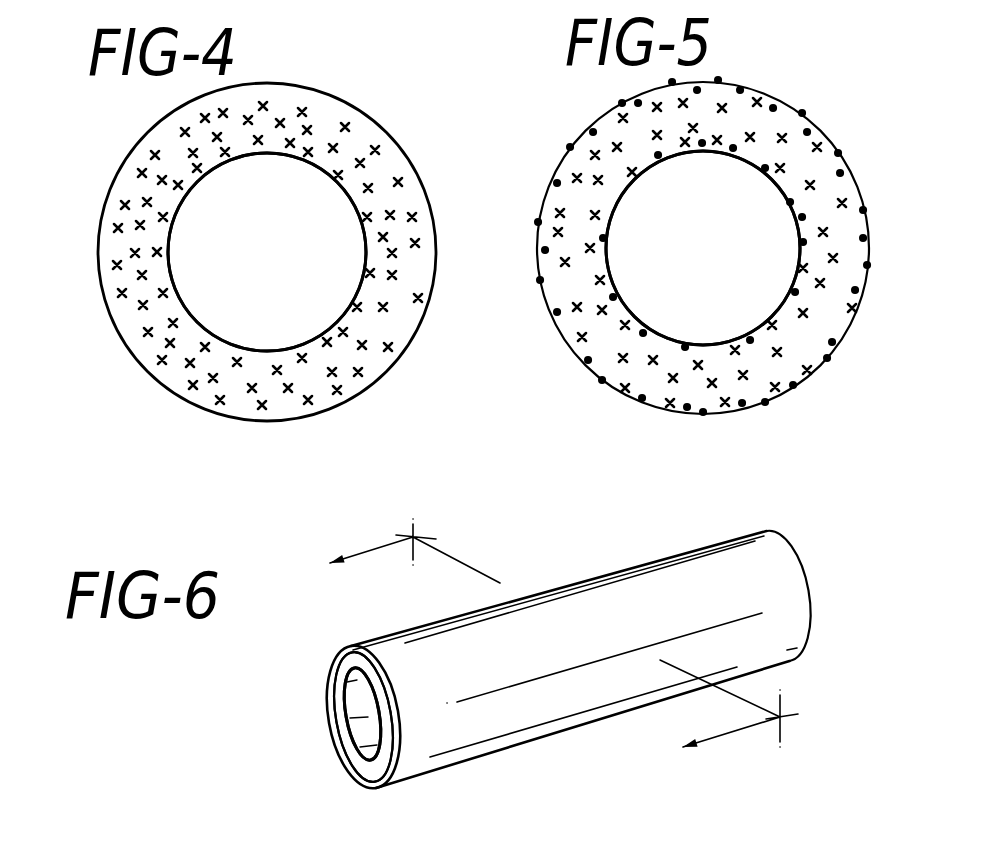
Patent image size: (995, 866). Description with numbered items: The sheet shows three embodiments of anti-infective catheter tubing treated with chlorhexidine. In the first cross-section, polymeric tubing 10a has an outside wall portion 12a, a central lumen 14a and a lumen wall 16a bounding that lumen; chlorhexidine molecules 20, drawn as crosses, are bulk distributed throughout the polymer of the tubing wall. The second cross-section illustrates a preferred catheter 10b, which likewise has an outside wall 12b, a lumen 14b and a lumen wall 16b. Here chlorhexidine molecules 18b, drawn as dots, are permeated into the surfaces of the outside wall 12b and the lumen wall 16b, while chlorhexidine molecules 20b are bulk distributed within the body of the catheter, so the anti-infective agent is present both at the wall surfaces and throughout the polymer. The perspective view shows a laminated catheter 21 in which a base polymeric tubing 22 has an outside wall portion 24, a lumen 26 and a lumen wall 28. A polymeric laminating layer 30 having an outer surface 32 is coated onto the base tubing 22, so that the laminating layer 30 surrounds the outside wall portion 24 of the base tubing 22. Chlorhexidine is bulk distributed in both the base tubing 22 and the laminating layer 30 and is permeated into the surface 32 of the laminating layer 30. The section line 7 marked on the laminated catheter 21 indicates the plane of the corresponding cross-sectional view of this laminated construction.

In FIG. 4, the polymeric tubing 10a is at (249, 250).
In FIG. 4, the outside wall portion 12a is at (120, 177).
In FIG. 4, the lumen 14a is at (240, 323).
In FIG. 4, the lumen wall 16a is at (191, 311).
In FIG. 4, the chlorhexidine molecules 20 is at (363, 343).
In FIG. 5, the catheter 10b is at (708, 220).
In FIG. 5, the outside wall 12b is at (845, 340).
In FIG. 5, the lumen 14b is at (755, 300).
In FIG. 5, the lumen wall 16b is at (664, 334).
In FIG. 5, the chlorhexidine molecules 18b is at (765, 168).
In FIG. 5, the chlorhexidine molecules 20b is at (757, 100).
In FIG. 6, the catheter 21 is at (520, 650).
In FIG. 6, the base polymeric tubing 22 is at (544, 661).
In FIG. 6, the outside wall portion 24 is at (363, 717).
In FIG. 6, the lumen 26 is at (362, 714).
In FIG. 6, the lumen wall 28 is at (362, 714).
In FIG. 6, the polymeric laminating layer 30 is at (564, 662).
In FIG. 6, the surface 32 is at (613, 702).
In FIG. 6, the section line 7- 7 is at (572, 632).